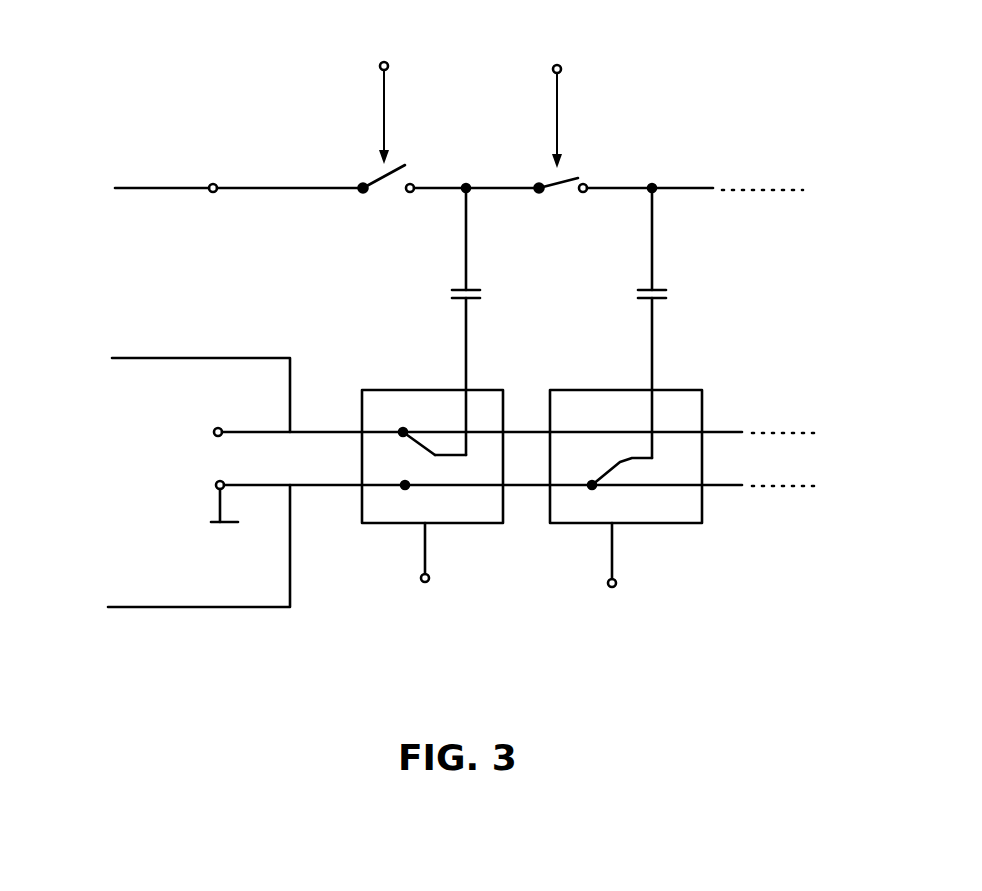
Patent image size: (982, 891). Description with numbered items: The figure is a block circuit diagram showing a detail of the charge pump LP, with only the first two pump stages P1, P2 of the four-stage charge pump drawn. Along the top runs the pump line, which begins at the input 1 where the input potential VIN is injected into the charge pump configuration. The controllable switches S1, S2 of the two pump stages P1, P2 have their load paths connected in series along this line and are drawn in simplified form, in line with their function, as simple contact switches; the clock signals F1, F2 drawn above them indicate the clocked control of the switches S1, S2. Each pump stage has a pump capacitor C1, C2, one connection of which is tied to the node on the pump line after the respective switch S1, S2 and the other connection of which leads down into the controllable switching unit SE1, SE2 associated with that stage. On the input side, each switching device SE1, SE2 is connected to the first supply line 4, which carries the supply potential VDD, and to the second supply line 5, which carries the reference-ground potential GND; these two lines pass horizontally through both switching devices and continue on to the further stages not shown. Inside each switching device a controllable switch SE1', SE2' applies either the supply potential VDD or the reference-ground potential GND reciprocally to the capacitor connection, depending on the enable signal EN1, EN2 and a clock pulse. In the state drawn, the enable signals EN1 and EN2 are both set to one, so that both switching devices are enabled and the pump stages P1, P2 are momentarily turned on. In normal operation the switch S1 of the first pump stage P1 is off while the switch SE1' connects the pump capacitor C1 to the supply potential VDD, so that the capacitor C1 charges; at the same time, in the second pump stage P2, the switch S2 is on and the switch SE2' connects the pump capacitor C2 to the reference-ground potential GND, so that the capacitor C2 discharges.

The input 1 is at (447, 190).
The first supply line 4 is at (189, 388).
The second supply line 5 is at (187, 556).
The input potential VIN is at (213, 207).
The controllable switch S1 is at (406, 162).
The controllable switch S2 is at (579, 176).
The first clock signal F1 is at (394, 97).
The second clock signal F2 is at (564, 100).
The first pump stage P1 is at (418, 268).
The second pump stage P2 is at (618, 268).
The pump capacitor C1 is at (488, 367).
The pump capacitor C2 is at (675, 369).
The charge pump LP is at (784, 338).
The supply potential VDD is at (506, 409).
The reference-ground potential GND is at (506, 521).
The controllable switching unit SE1 is at (419, 505).
The controllable switching unit SE2 is at (636, 505).
The controllable switch SE1' is at (425, 442).
The controllable switch SE2' is at (610, 442).
The enable signal EN1 is at (459, 571).
The enable signal EN2 is at (645, 571).